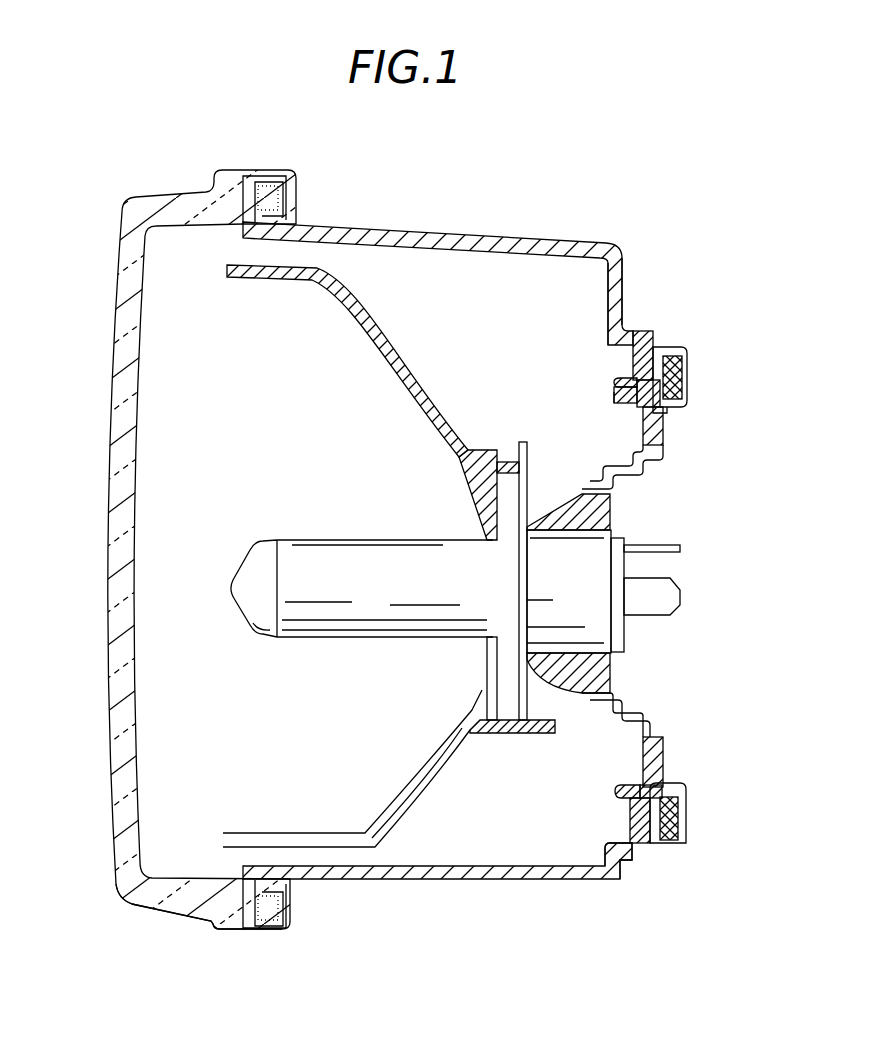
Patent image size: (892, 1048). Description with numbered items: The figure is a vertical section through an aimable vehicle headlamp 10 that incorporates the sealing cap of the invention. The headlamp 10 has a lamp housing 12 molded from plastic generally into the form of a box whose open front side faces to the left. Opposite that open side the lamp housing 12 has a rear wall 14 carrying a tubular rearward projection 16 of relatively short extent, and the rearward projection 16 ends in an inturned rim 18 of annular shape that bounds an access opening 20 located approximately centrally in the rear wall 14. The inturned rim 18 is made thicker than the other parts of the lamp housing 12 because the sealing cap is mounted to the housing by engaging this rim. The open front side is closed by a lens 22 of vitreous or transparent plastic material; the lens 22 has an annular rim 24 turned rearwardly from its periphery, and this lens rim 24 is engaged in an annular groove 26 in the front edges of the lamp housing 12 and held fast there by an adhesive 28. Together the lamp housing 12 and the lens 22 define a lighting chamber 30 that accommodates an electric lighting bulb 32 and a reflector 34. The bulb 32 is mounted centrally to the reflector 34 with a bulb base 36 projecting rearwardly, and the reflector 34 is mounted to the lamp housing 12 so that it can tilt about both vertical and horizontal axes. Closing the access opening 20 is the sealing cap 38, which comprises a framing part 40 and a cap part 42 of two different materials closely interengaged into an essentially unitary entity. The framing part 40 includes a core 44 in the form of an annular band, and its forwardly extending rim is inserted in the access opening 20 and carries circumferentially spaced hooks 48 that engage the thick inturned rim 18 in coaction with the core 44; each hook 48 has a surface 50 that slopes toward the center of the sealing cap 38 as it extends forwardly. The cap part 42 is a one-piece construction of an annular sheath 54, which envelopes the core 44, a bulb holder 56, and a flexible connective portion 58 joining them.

The aimable vehicle headlamp 10 is at (141, 126).
The lamp housing 12 is at (463, 216).
The rear wall 14 is at (622, 292).
The tubular rearward projection 16 is at (634, 862).
The inturned rim 18 is at (628, 828).
The access opening 20 is at (636, 408).
The lens 22 is at (106, 548).
The annular rim 24 is at (170, 908).
The annular groove 26 is at (262, 168).
The adhesive 28 is at (243, 226).
The lighting chamber 30 is at (389, 556).
The electric lighting bulb 32 is at (356, 540).
The reflector 34 is at (380, 345).
The bulb base 36 is at (582, 566).
The sealing cap 38 is at (666, 337).
The framing part 40 is at (604, 398).
The cap part 42 is at (700, 393).
The core 44 is at (688, 372).
The hooks 48 is at (628, 385).
The sloping surface 50 is at (618, 380).
The sheath 54 is at (690, 790).
The bulb holder 56 is at (598, 497).
The flexible connective portion 58 is at (630, 715).